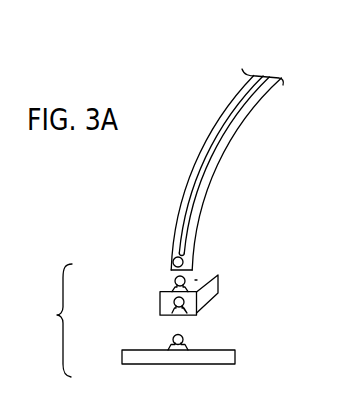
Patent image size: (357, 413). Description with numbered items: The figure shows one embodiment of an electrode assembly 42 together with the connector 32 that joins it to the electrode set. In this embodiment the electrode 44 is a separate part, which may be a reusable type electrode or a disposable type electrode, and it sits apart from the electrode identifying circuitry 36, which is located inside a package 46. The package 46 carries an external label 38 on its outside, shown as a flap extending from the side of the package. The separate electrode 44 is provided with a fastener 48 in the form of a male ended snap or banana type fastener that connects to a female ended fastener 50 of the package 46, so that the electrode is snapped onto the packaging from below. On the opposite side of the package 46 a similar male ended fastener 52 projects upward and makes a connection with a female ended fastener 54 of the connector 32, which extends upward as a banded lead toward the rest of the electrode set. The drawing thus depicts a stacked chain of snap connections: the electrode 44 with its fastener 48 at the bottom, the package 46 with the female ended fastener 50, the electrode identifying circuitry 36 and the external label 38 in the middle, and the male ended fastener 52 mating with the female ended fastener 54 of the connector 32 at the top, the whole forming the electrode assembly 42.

The connector 32 is at (214, 128).
The electrode identifying circuitry 36 is at (195, 280).
The external label 38 is at (220, 287).
The electrode assembly 42 is at (49, 320).
The electrode 44 is at (227, 350).
The package 46 is at (160, 300).
The fastener 48 is at (185, 339).
The female ended fastener 50 is at (170, 316).
The male ended fastener 52 is at (173, 276).
The female ended fastener 54 is at (172, 270).